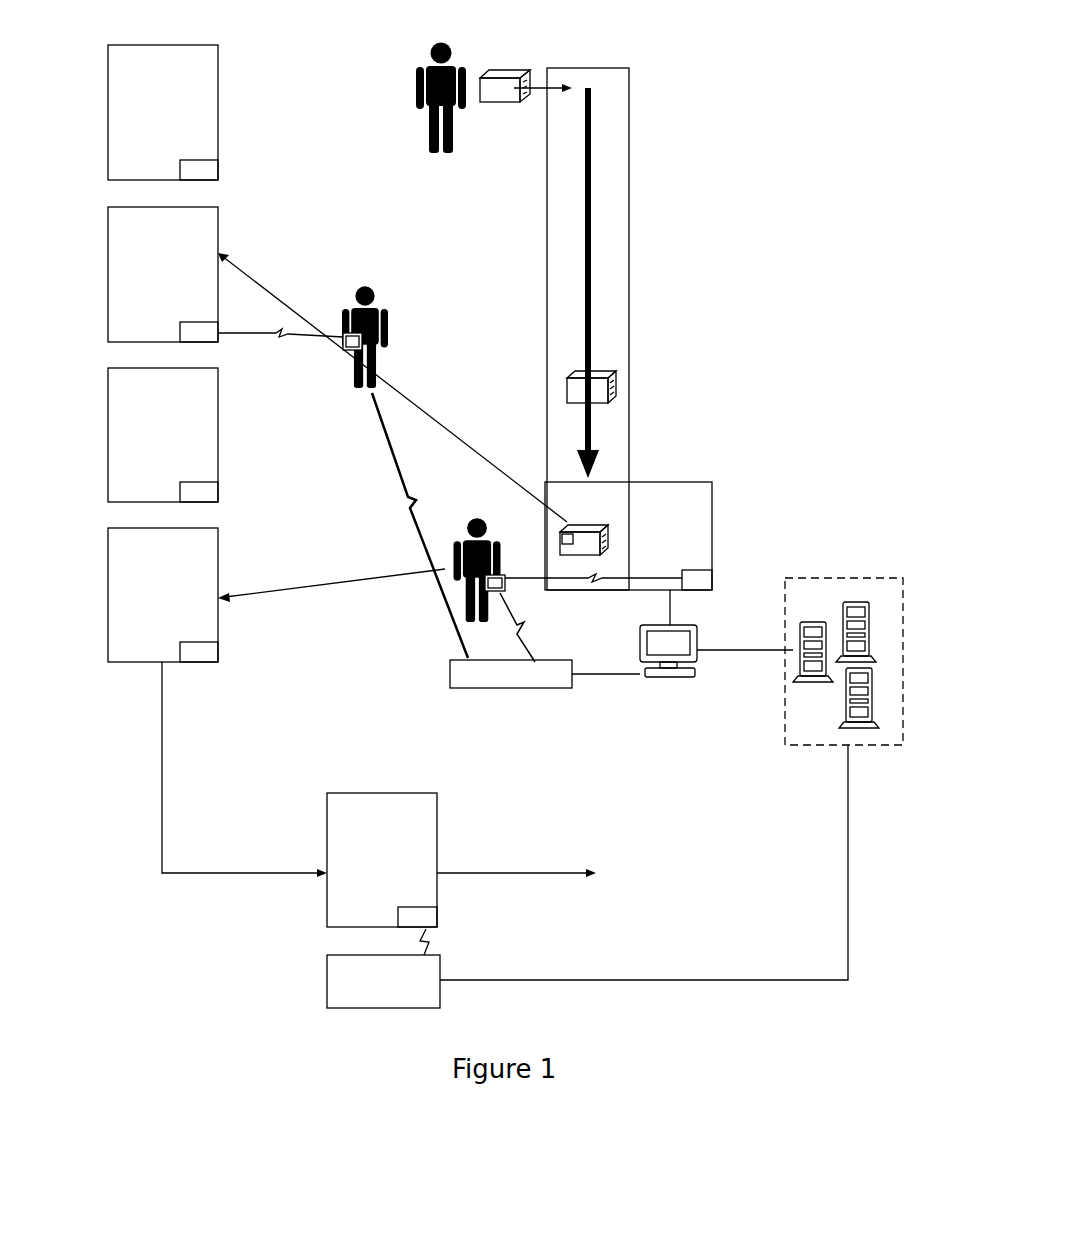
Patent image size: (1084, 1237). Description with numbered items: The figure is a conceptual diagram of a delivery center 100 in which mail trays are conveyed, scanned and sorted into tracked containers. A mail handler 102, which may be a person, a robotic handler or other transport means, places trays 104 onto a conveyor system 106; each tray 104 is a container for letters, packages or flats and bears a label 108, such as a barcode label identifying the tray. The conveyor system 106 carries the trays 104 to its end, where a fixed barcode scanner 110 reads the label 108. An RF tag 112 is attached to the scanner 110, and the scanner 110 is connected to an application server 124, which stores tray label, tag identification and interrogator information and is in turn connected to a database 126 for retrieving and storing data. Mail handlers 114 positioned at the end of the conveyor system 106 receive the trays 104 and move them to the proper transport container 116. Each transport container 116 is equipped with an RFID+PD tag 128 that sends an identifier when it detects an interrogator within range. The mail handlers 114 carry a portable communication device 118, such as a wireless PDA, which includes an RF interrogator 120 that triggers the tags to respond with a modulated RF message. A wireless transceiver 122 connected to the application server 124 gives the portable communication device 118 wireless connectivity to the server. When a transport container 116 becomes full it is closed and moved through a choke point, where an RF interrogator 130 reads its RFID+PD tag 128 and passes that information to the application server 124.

The delivery center 100 is at (660, 44).
The mail handler 102 is at (452, 44).
The tray 104 is at (505, 80).
The conveyor system 106 is at (615, 123).
The label 108 is at (567, 538).
The scanner 110 is at (700, 500).
The RF tag 112 is at (714, 580).
The mail handlers 114 is at (374, 286).
The transport container 116 is at (205, 64).
The portable communication device 118 is at (345, 352).
The RF interrogator 120 is at (343, 336).
The wireless transceiver 122 is at (500, 690).
The application server 124 is at (682, 643).
The database 126 is at (835, 580).
The RFID+PD tag 128 is at (207, 168).
The RF interrogator 130 is at (432, 967).